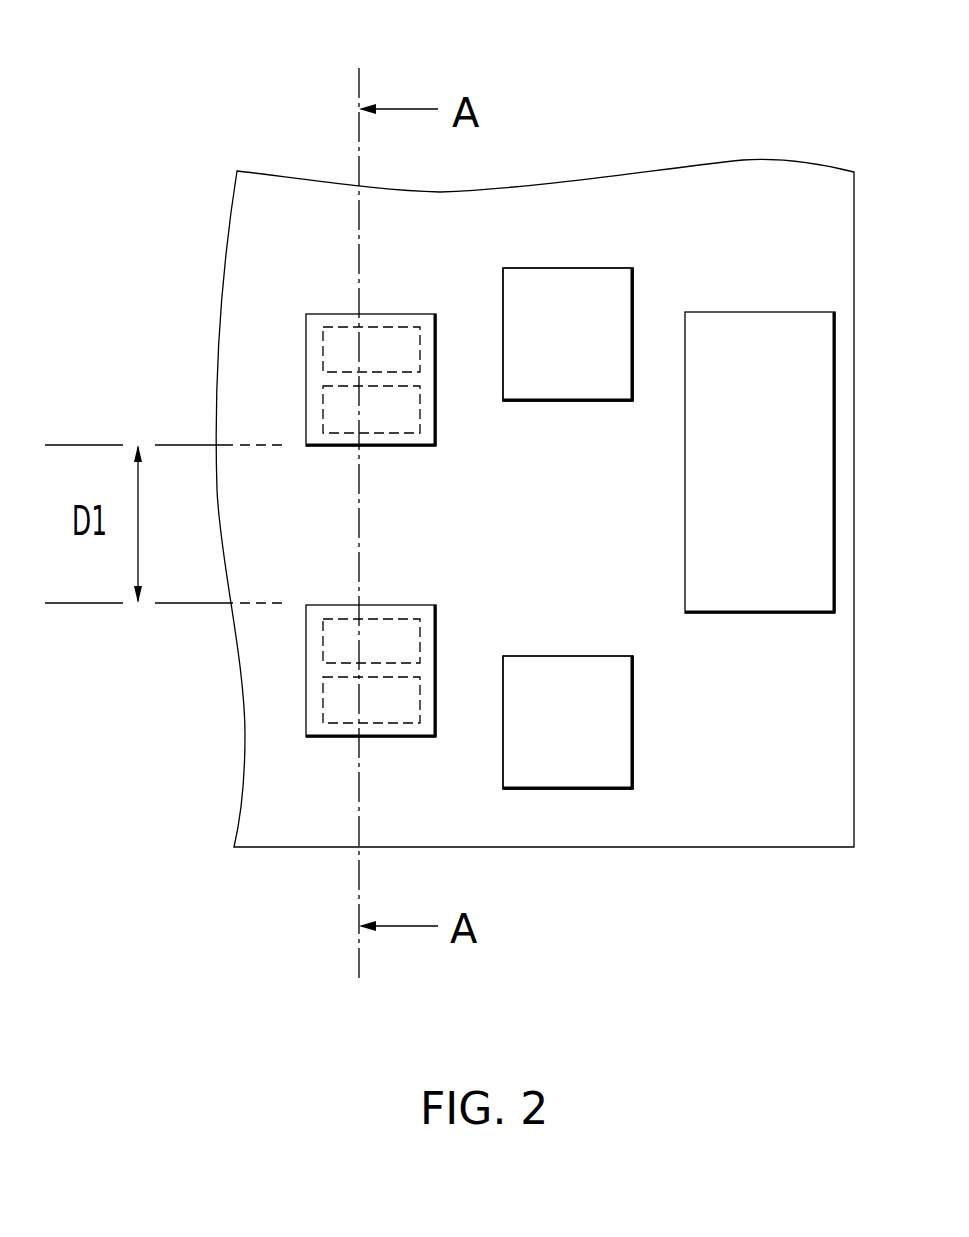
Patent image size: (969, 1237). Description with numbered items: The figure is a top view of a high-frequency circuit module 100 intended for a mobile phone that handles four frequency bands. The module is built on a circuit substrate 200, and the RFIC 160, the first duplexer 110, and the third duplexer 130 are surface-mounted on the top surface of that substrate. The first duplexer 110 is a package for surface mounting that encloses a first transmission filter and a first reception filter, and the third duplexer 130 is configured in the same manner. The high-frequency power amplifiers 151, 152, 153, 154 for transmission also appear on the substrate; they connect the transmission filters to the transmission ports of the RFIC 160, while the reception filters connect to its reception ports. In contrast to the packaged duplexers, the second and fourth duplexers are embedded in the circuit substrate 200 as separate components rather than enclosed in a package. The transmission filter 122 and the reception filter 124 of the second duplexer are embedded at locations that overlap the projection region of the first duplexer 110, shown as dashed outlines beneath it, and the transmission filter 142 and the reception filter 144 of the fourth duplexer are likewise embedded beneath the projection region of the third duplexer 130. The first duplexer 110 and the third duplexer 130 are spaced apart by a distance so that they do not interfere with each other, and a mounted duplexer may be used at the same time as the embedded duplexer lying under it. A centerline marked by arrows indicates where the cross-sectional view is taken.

The high-frequency circuit module 100 is at (550, 112).
The circuit substrate 200 is at (792, 183).
The first duplexer 110 is at (340, 314).
The transmission filter 122 is at (388, 335).
The reception filter 124 is at (390, 422).
The third duplexer 130 is at (340, 605).
The transmission filter 142 is at (388, 626).
The reception filter 144 is at (390, 713).
The high-frequency power amplifier 151 is at (568, 268).
The high-frequency power amplifier 152 is at (630, 294).
The high-frequency power amplifier 153 is at (633, 750).
The high-frequency power amplifier 154 is at (663, 722).
The RFIC 160 is at (758, 312).